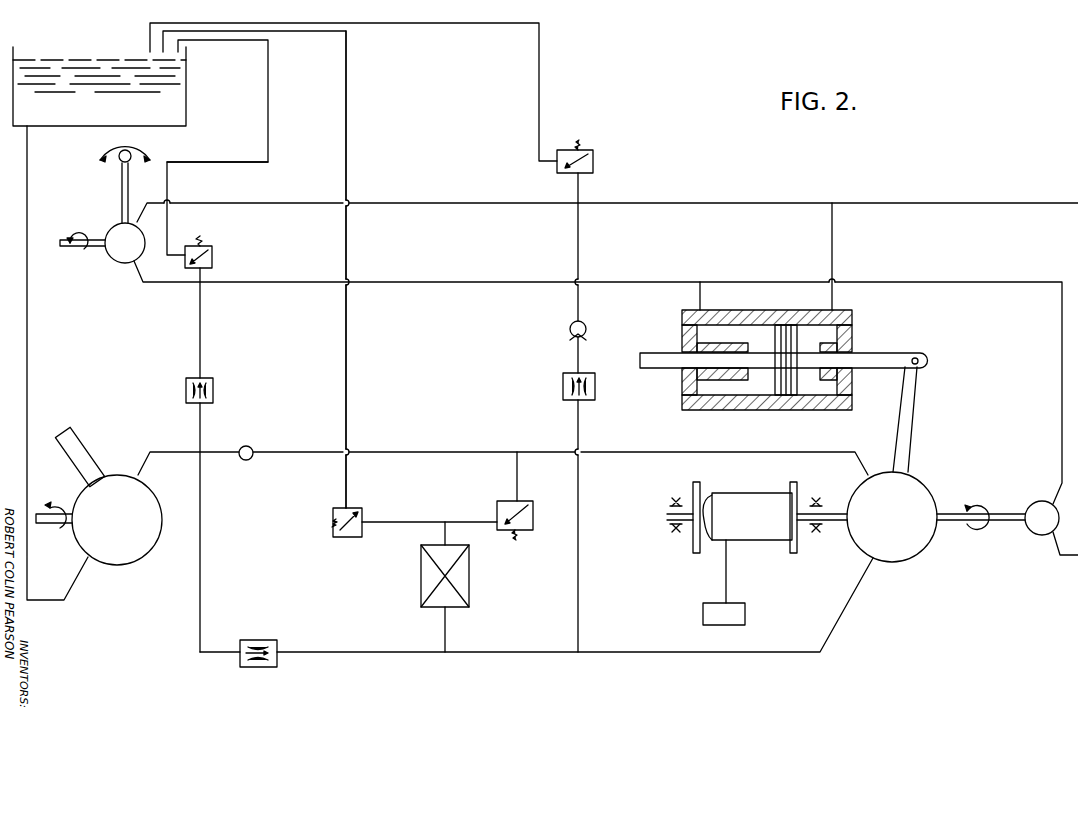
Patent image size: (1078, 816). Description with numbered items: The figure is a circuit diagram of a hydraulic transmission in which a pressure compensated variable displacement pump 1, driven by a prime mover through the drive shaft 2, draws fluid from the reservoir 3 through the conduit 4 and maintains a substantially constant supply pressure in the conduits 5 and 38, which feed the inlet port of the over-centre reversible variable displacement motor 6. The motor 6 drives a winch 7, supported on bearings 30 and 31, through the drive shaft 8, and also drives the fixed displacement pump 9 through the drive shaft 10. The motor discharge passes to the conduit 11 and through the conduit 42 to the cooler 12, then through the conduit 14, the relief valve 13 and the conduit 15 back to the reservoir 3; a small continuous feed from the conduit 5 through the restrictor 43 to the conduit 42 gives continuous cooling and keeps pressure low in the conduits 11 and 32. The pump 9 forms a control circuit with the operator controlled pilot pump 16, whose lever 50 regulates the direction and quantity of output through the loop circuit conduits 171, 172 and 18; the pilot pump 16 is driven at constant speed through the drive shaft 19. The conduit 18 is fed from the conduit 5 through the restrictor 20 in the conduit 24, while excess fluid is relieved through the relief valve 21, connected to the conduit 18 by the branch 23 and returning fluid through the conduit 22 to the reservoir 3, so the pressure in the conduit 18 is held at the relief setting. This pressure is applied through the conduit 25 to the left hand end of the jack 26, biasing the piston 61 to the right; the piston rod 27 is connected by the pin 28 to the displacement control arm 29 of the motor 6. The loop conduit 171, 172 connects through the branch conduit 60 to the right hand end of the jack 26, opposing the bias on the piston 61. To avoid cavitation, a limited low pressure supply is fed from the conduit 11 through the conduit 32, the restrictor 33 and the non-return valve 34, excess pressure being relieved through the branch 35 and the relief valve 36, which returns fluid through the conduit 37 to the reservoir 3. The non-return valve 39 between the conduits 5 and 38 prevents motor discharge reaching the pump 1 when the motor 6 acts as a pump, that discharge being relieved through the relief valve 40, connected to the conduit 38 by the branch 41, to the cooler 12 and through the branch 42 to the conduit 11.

The pump 1 is at (140, 553).
The drive shaft 2 is at (55, 530).
The reservoir 3 is at (180, 107).
The conduit 4 is at (30, 383).
The conduit 5 is at (190, 452).
The variable displacement motor 6 is at (920, 495).
The winch 7 is at (745, 500).
The drive shaft 8 is at (840, 525).
The pump 9 is at (1045, 533).
The drive shaft 10 is at (1002, 510).
The conduit 11 is at (848, 617).
The cooler 12 is at (470, 585).
The relief valve 13 is at (365, 513).
The conduit 14 is at (435, 522).
The conduit 15 is at (350, 368).
The variable flow control device 16 is at (120, 266).
The conduit 18 is at (1000, 283).
The drive shaft 19 is at (100, 253).
The restrictor 20 is at (215, 392).
The relief valve 21 is at (213, 256).
The conduit 22 is at (172, 191).
The branch 23 is at (205, 280).
The conduit 24 is at (205, 345).
The conduit 25 is at (700, 302).
The jack 26 is at (852, 313).
The piston rod 27 is at (890, 352).
The pin 28 is at (925, 361).
The displacement control arm 29 is at (905, 423).
The bearing 30 is at (677, 502).
The bearing 31 is at (820, 502).
The conduit 32 is at (582, 590).
The restrictor 33 is at (598, 385).
The non-return valve 34 is at (588, 332).
The branch 35 is at (580, 195).
The relief valve 36 is at (595, 160).
The conduit 37 is at (540, 103).
The conduit 38 is at (315, 452).
The non-return valve 39 is at (252, 448).
The relief valve 40 is at (535, 520).
The branch 41 is at (520, 480).
The conduit 42 is at (450, 633).
The restrictor 43 is at (263, 637).
The lever 50 is at (122, 165).
The branch conduit 60 is at (833, 255).
The piston 61 is at (783, 325).
The loop circuit conduit 171 is at (540, 205).
The loop circuit conduit 172 is at (960, 205).